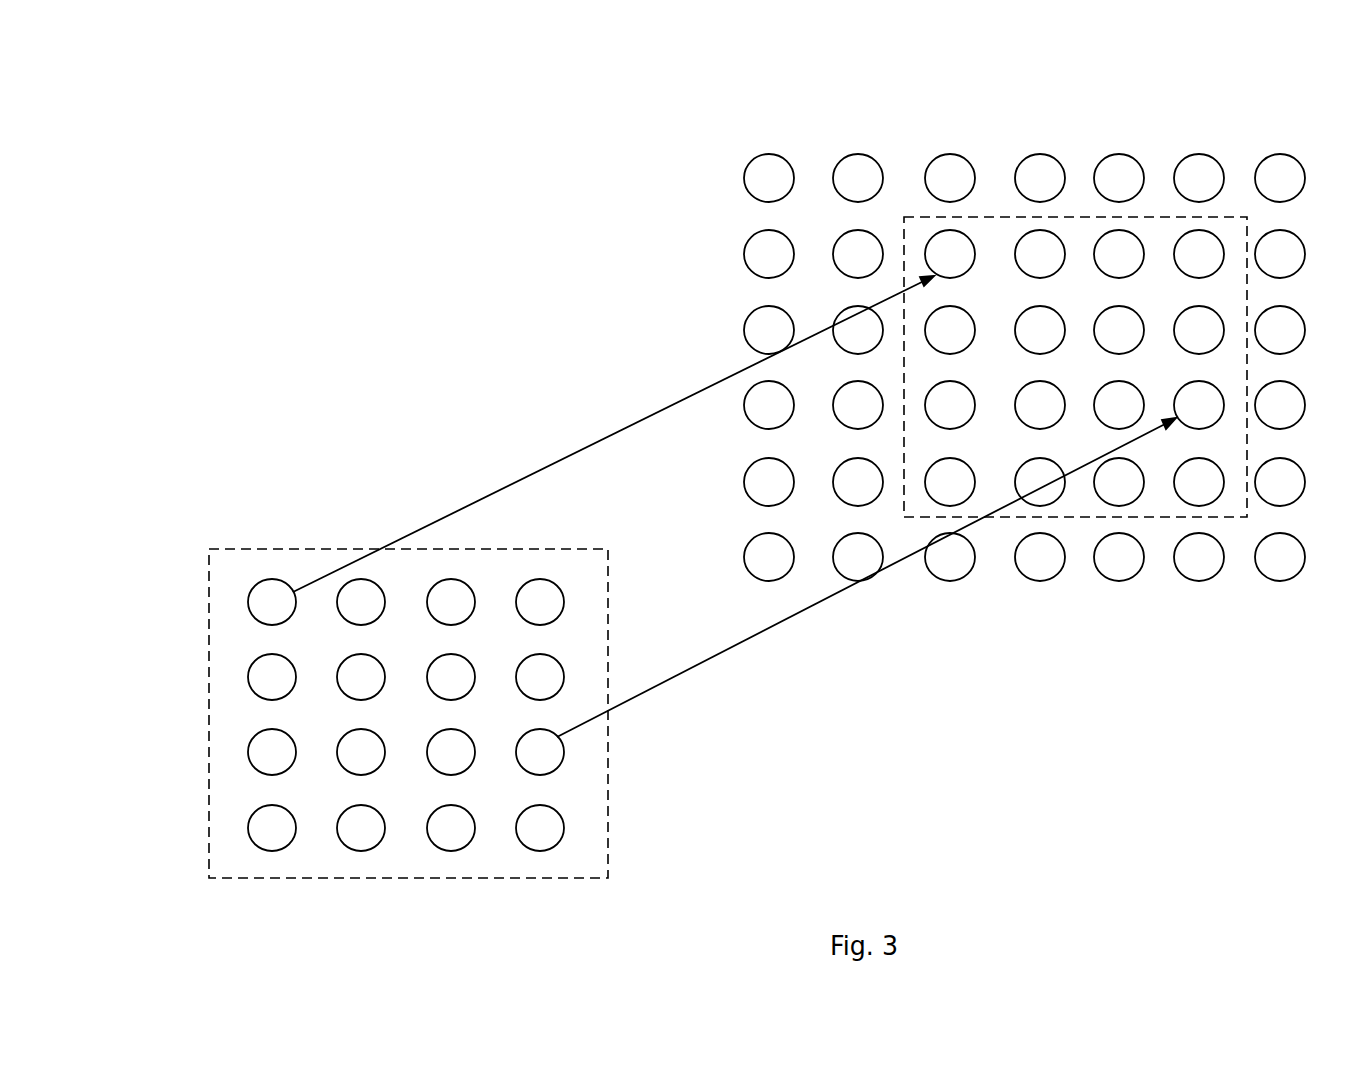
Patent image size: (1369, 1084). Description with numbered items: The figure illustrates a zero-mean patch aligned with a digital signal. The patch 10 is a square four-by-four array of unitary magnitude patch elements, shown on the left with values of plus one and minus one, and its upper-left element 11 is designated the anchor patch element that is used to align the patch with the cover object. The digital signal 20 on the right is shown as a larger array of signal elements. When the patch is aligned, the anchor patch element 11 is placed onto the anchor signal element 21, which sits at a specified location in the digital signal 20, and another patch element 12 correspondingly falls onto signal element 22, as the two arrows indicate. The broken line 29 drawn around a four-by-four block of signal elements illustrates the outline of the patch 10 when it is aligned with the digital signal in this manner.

The patch 10 is at (398, 655).
The anchor patch element 11 is at (248, 592).
The patch element 12 is at (563, 753).
The digital signal 20 is at (1043, 356).
The anchor signal element 21 is at (965, 238).
The signal element 22 is at (1212, 385).
The broken line 29 is at (1220, 518).